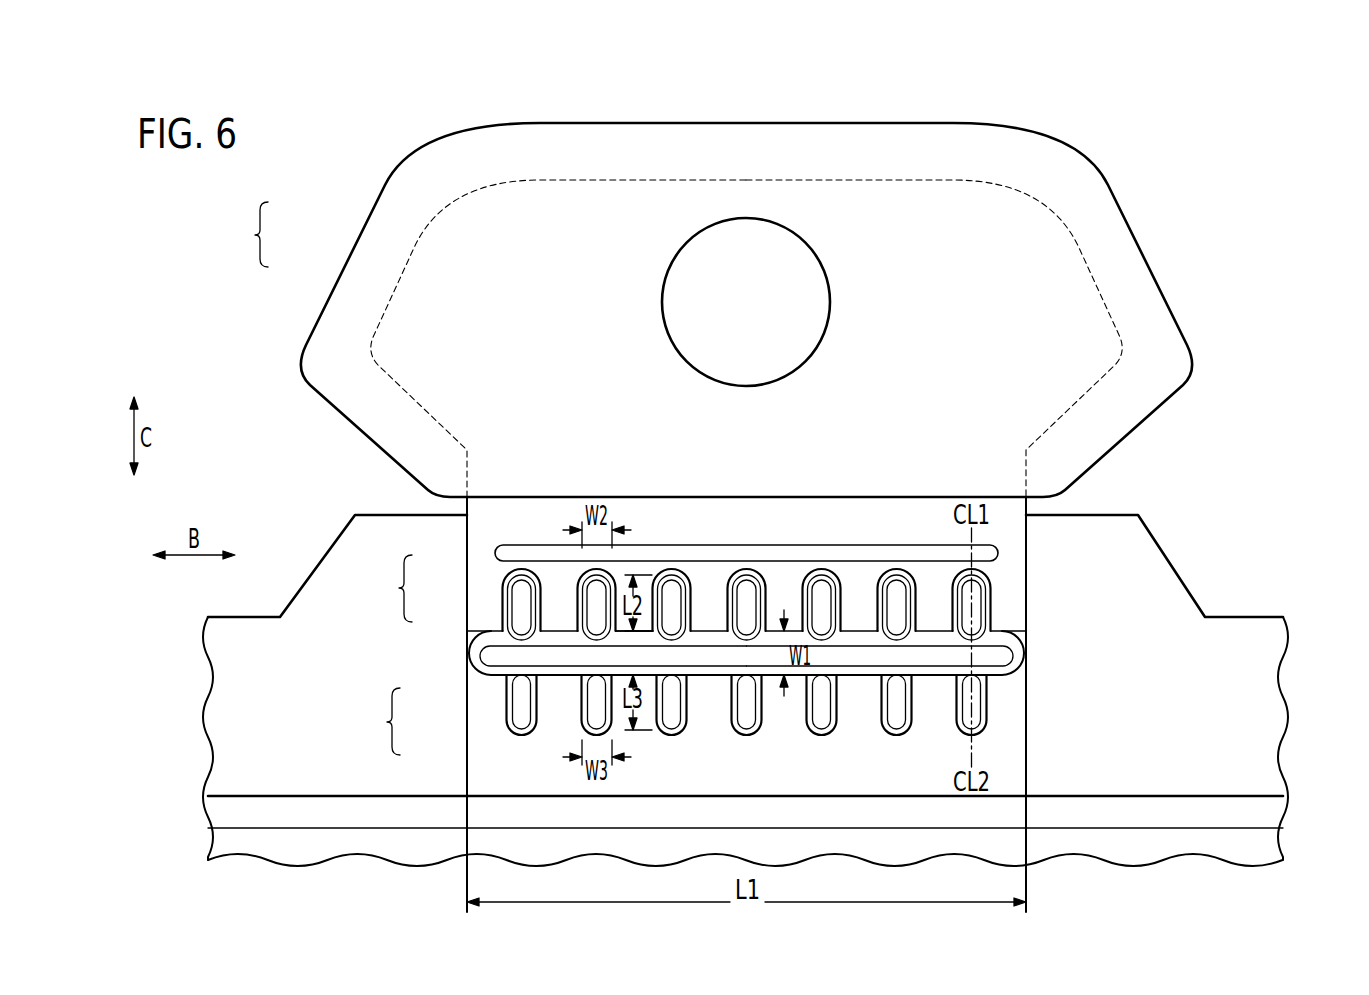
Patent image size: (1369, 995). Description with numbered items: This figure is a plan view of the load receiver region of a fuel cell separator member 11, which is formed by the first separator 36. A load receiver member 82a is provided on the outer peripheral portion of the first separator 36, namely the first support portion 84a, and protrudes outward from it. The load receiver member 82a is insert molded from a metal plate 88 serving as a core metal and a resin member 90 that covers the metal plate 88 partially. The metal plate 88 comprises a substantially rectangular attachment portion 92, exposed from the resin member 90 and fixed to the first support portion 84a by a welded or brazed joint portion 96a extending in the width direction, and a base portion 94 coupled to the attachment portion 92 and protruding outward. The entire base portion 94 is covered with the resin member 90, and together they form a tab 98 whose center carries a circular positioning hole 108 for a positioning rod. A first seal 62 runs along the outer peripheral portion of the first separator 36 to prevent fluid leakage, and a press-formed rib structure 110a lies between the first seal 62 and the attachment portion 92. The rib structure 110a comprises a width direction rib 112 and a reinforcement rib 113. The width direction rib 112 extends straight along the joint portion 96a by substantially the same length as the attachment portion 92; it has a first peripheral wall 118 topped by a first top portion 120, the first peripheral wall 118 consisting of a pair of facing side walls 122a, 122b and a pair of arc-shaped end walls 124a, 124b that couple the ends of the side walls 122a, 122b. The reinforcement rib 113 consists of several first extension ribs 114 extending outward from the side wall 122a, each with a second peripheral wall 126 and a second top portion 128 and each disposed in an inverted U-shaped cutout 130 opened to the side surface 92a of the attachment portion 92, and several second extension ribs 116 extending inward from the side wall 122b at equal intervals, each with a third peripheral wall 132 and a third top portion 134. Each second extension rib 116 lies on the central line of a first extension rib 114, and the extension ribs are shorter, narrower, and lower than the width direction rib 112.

The fuel cell separator member 11 is at (323, 151).
The load receiver member 82a is at (745, 310).
The metal plate 88 is at (1100, 281).
The resin member 90 is at (366, 227).
The base portion 94 is at (389, 303).
The tab 98 is at (250, 234).
The positioning hole 108 is at (688, 288).
The joint portion 96a is at (903, 553).
The attachment portion 92 is at (789, 567).
The side surface 92a is at (1027, 633).
The first support portion 84a is at (1150, 567).
The first separator 36 is at (1270, 647).
The first seal 62 is at (1200, 808).
The rib structure 110a is at (661, 641).
The width direction rib 112 is at (701, 697).
The end wall 124a is at (1022, 652).
The end wall 124b is at (478, 653).
The reinforcement rib 113 is at (655, 641).
The first extension rib 114 is at (667, 569).
The second extension rib 116 is at (655, 729).
The second peripheral wall 126 is at (505, 576).
The second top portion 128 is at (520, 592).
The cutout 130 is at (824, 578).
The third top portion 134 is at (508, 713).
The third peripheral wall 132 is at (520, 726).
The side wall 122a is at (708, 640).
The side wall 122b is at (708, 676).
The first peripheral wall 118 is at (993, 678).
The first top portion 120 is at (867, 657).